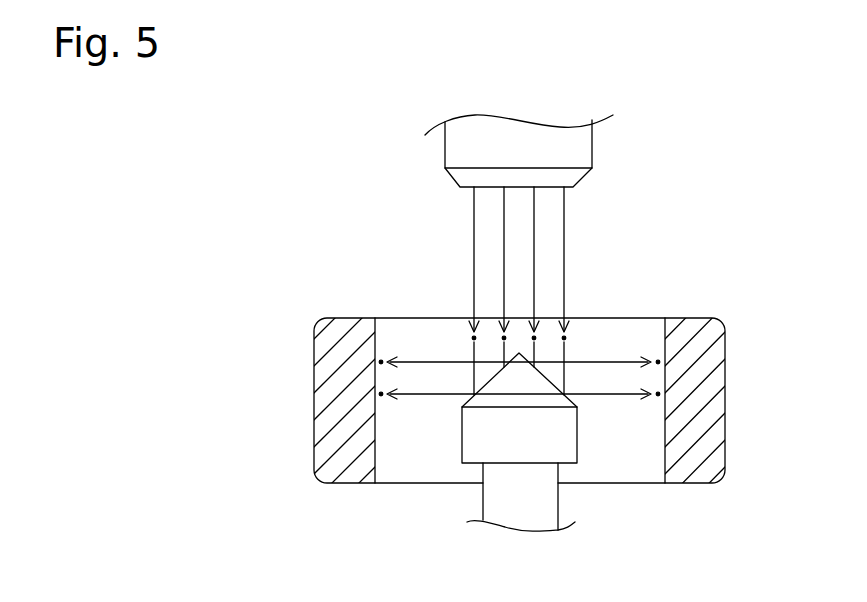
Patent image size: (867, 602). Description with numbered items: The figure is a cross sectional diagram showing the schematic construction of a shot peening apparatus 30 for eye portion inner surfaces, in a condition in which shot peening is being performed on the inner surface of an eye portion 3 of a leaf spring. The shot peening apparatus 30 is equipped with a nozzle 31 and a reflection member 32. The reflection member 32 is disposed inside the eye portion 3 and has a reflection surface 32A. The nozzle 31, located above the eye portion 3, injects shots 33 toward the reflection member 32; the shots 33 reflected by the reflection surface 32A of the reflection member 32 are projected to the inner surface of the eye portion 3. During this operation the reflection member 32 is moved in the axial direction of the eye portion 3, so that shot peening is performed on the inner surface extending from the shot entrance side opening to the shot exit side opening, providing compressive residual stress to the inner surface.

The shot peening apparatus 30 is at (699, 201).
The nozzle 31 is at (577, 153).
The shots 33 is at (471, 337).
The eye portion 3 is at (713, 387).
The reflection member 32 is at (545, 513).
The reflection surface 32A is at (545, 393).